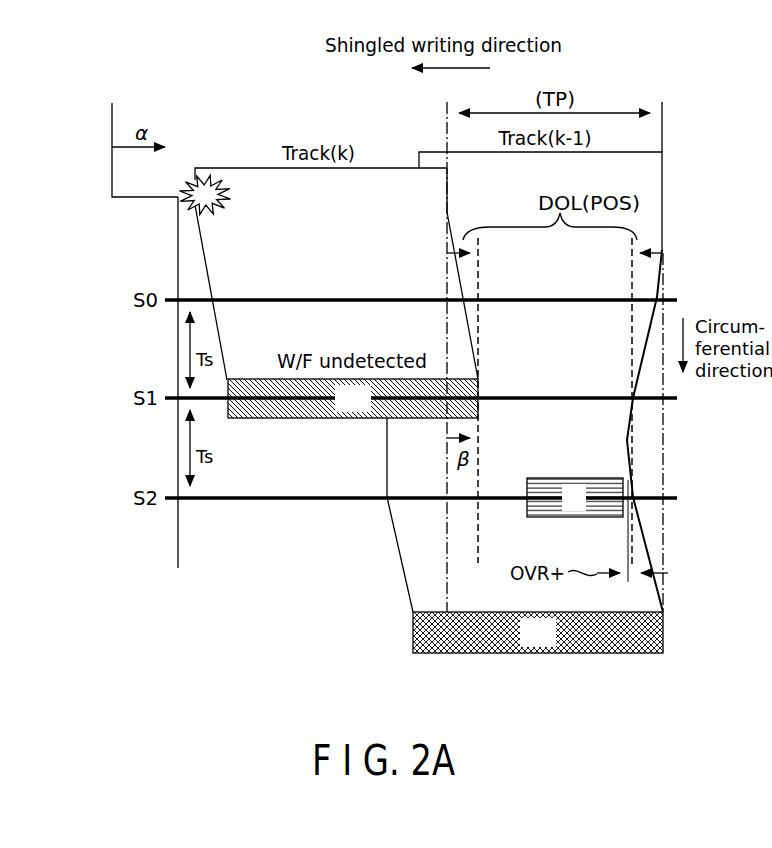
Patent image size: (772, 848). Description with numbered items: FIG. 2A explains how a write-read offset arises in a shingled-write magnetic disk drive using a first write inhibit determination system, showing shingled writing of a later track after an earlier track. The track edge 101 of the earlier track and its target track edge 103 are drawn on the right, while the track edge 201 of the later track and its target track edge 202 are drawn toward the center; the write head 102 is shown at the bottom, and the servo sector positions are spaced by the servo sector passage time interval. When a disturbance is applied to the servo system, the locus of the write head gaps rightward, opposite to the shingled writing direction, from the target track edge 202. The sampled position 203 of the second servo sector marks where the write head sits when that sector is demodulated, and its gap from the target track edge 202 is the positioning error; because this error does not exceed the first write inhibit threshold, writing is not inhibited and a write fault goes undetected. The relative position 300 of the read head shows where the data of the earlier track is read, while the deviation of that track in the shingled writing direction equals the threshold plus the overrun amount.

The track edge of the track (k−1) 101 is at (647, 523).
The write head 102 is at (665, 628).
The target track edge of the track (k−1) 103 is at (663, 442).
The track edge of the track (k) 201 is at (455, 277).
The target track edge of the track (k) 202 is at (448, 473).
The sampled position of the servo sector S1 203 is at (263, 378).
The relative position of the read head 300 is at (573, 478).